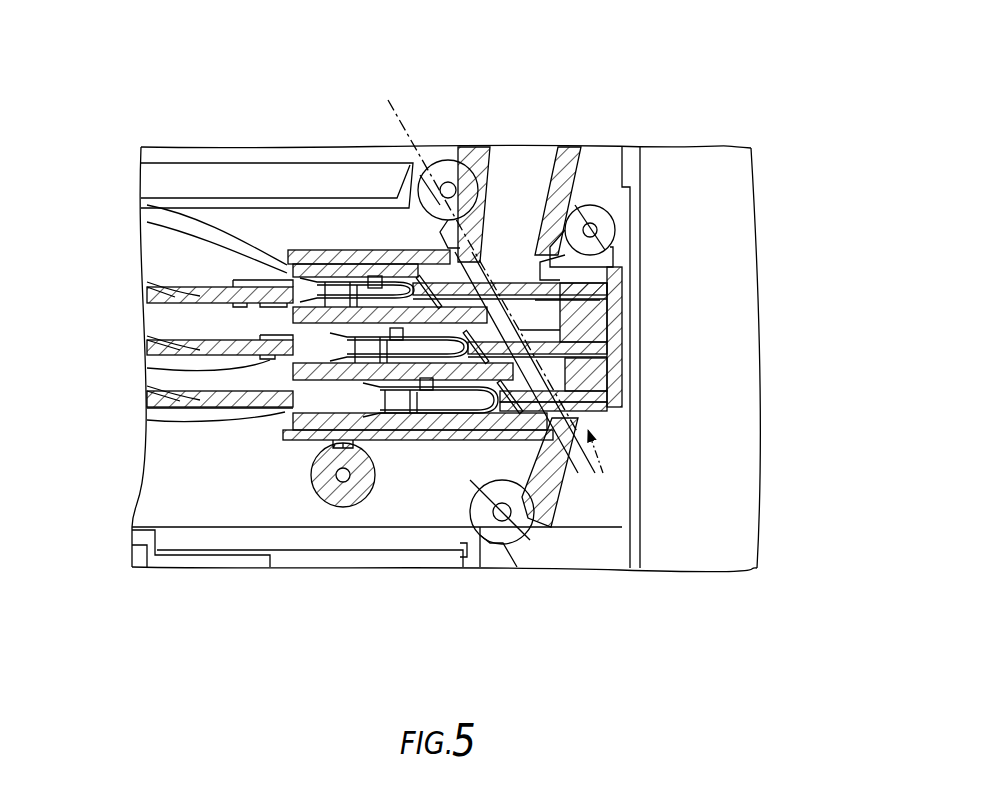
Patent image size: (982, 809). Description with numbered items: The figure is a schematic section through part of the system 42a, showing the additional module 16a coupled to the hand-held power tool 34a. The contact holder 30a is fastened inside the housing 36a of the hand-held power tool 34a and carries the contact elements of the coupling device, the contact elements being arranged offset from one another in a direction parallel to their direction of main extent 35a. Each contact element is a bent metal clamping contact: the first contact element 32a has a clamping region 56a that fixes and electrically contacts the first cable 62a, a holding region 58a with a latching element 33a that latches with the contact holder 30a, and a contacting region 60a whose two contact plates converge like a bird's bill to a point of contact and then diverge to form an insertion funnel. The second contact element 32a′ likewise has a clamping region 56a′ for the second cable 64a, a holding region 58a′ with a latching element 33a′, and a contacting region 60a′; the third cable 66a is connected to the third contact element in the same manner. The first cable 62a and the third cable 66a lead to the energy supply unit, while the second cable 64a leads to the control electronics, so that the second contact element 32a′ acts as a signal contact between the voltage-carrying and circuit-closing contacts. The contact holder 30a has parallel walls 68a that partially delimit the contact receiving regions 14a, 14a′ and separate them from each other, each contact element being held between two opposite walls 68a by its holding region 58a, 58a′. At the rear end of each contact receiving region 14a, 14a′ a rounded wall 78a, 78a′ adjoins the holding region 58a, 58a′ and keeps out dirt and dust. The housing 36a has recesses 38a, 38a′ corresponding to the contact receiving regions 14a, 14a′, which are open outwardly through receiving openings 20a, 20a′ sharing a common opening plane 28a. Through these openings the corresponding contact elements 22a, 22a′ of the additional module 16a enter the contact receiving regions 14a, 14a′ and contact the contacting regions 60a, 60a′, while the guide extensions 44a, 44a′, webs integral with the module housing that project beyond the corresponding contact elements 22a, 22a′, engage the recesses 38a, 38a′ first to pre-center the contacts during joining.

The additional module 16a is at (745, 140).
The system 42a is at (790, 160).
The hand-held power tool 34a is at (168, 130).
The direction of main extent 35a is at (140, 590).
The first contact element 32a is at (222, 274).
The first cable 62a is at (167, 295).
The second contact element 32a′ is at (246, 327).
The second cable 64a is at (183, 353).
The third cable 66a is at (160, 410).
The clamping region 56a is at (253, 283).
The clamping region 56a′ is at (273, 363).
The walls 68a is at (280, 258).
The contact holder 30a is at (272, 250).
The holding region 58a is at (336, 252).
The latching element 33a is at (300, 250).
The holding region 58a′ is at (345, 380).
The latching element 33a′ is at (369, 440).
The first contact receiving region 14a is at (360, 282).
The second contact receiving region 14a′ is at (600, 397).
The contacting region 60a is at (418, 277).
The contacting region 60a′ is at (465, 332).
The wall 78a is at (368, 278).
The wall 78a′ is at (390, 340).
The first corresponding contact element 22a is at (580, 293).
The second corresponding contact element 22a′ is at (603, 345).
The first guide extension 44a is at (503, 277).
The second guide extension 44a′ is at (597, 327).
The first receiving opening 20a is at (505, 277).
The second receiving opening 20a′ is at (540, 330).
The first recess 38a is at (525, 277).
The second recess 38a′ is at (565, 362).
The housing 36a is at (503, 545).
The opening plane 28a is at (408, 130).